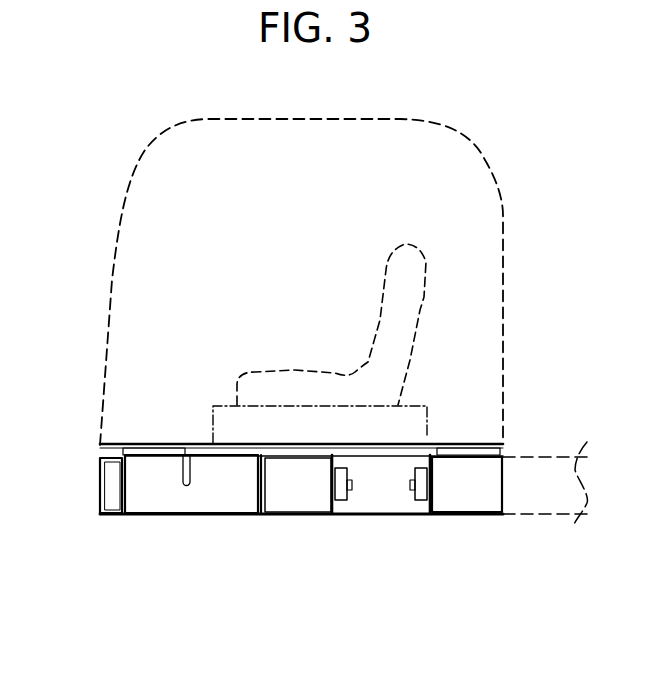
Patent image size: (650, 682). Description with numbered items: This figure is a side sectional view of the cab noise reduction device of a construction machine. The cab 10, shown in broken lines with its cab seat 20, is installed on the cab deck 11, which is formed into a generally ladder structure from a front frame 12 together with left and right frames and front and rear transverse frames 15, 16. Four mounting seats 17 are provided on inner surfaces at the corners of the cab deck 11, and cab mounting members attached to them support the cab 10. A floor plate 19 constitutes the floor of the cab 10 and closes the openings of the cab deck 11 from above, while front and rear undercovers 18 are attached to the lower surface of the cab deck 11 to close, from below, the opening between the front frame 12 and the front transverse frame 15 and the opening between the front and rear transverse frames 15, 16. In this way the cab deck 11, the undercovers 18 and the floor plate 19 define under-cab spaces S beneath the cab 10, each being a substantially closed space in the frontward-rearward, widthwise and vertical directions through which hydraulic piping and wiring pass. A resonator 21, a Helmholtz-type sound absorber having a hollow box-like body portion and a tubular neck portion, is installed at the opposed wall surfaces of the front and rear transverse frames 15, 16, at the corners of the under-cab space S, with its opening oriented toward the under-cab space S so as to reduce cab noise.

The cab 10 is at (490, 188).
The cab seat 20 is at (423, 297).
The floor plate 19 is at (310, 447).
The cab deck 11 is at (227, 527).
The rear transverse frame 16 is at (503, 485).
The front frame 12 is at (102, 477).
The undercover 18 is at (155, 515).
The mounting seat 17 is at (147, 443).
The front transverse frame 15 is at (295, 514).
The resonator 21 is at (413, 497).
The under-cab space S is at (212, 473).